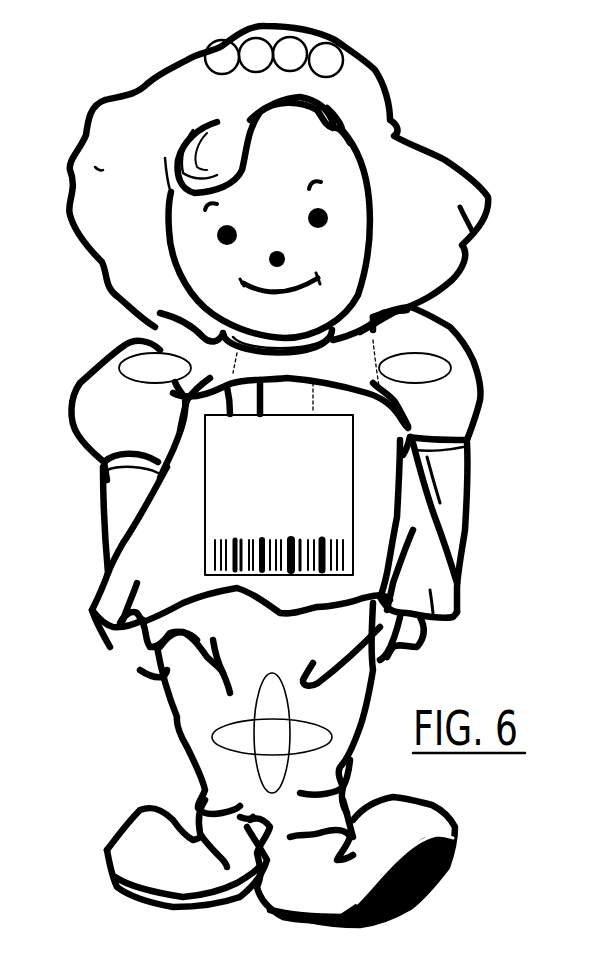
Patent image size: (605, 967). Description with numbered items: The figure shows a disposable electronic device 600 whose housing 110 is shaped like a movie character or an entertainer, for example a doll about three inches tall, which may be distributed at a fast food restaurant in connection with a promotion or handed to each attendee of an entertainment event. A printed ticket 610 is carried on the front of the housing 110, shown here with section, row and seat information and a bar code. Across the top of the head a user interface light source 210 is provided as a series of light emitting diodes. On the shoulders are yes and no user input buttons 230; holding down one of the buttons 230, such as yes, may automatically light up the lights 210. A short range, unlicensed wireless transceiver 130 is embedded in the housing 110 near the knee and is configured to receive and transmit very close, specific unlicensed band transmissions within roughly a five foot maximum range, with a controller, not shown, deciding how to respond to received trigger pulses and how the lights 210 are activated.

The disposable electronic device 600 is at (432, 104).
The user interface light source 210 is at (252, 38).
The housing 110 is at (436, 318).
The user input buttons 230 is at (118, 370).
The printed ticket 610 is at (335, 490).
The short range, unlicensed wireless transceiver 130 is at (205, 738).